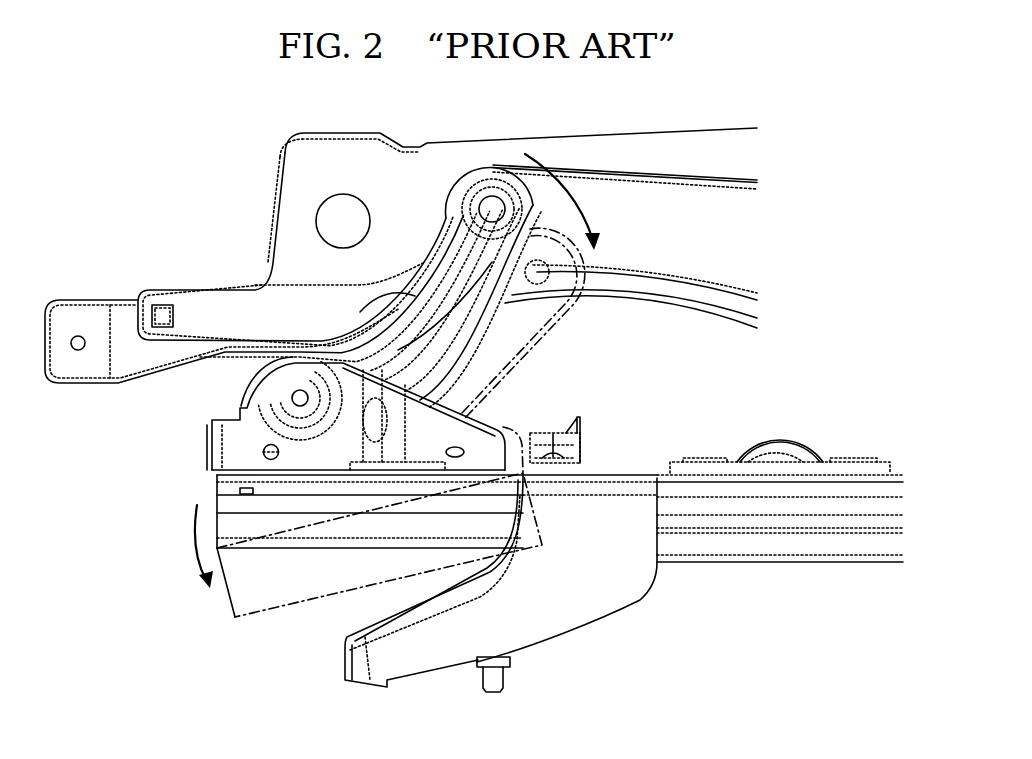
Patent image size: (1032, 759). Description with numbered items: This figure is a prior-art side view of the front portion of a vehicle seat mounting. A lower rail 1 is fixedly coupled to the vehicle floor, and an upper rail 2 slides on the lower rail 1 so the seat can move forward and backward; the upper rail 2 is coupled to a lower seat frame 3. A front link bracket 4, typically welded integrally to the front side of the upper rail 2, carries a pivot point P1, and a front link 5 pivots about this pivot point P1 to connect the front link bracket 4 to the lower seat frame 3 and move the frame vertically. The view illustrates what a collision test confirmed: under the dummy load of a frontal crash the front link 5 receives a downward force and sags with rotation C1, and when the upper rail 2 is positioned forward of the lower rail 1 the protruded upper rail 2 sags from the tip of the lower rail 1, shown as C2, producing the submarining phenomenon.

The lower rail 1 is at (727, 540).
The upper rail 2 is at (233, 487).
The lower seat frame 3 is at (642, 260).
The front link bracket 4 is at (247, 447).
The front link 5 is at (453, 225).
The pivot point P1 is at (293, 396).
The rotation of the front link C1 is at (549, 255).
The sagging of the upper rail C2 is at (229, 548).